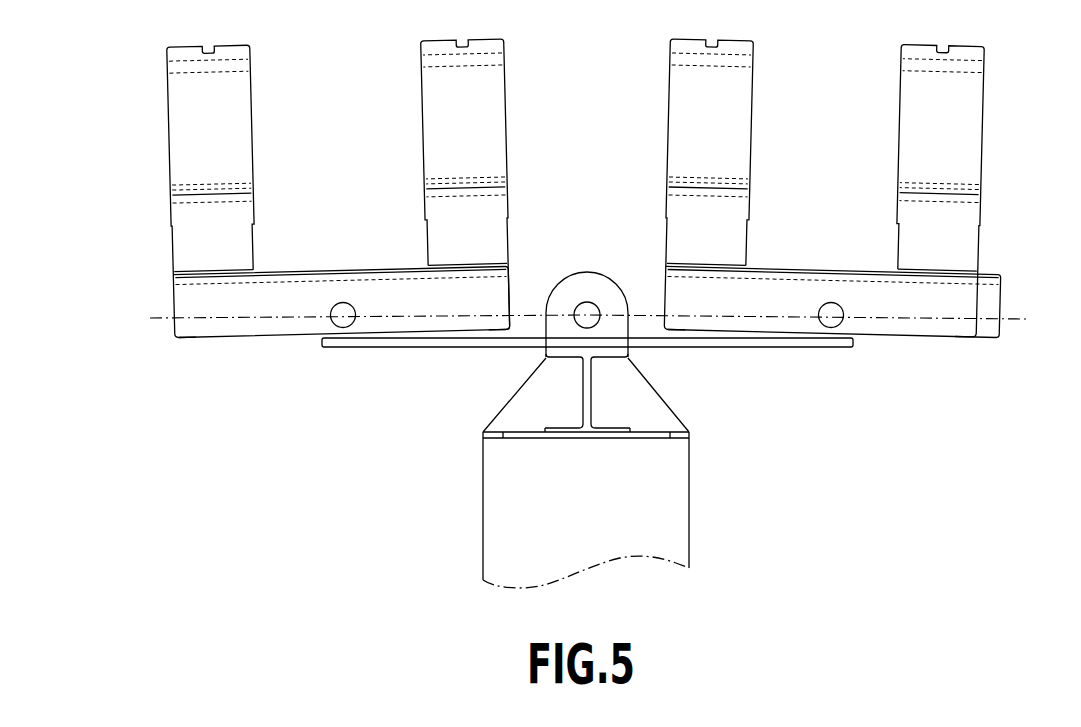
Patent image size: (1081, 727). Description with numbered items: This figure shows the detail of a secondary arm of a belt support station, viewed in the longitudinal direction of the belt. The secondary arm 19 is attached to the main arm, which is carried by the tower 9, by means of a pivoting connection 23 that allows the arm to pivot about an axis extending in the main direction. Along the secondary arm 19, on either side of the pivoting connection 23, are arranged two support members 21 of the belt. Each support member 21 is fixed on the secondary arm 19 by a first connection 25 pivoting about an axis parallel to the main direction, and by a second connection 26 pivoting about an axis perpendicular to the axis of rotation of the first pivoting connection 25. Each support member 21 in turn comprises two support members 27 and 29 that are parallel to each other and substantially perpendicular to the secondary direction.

The tower 9 is at (655, 503).
The secondary arm 19 is at (521, 334).
The support member of the belt 21 is at (254, 315).
The pivoting connection 23 is at (588, 312).
The first pivoting connection 25 is at (342, 318).
The second pivoting connection 26 is at (156, 320).
The support member 27 is at (200, 143).
The support member 29 is at (473, 102).